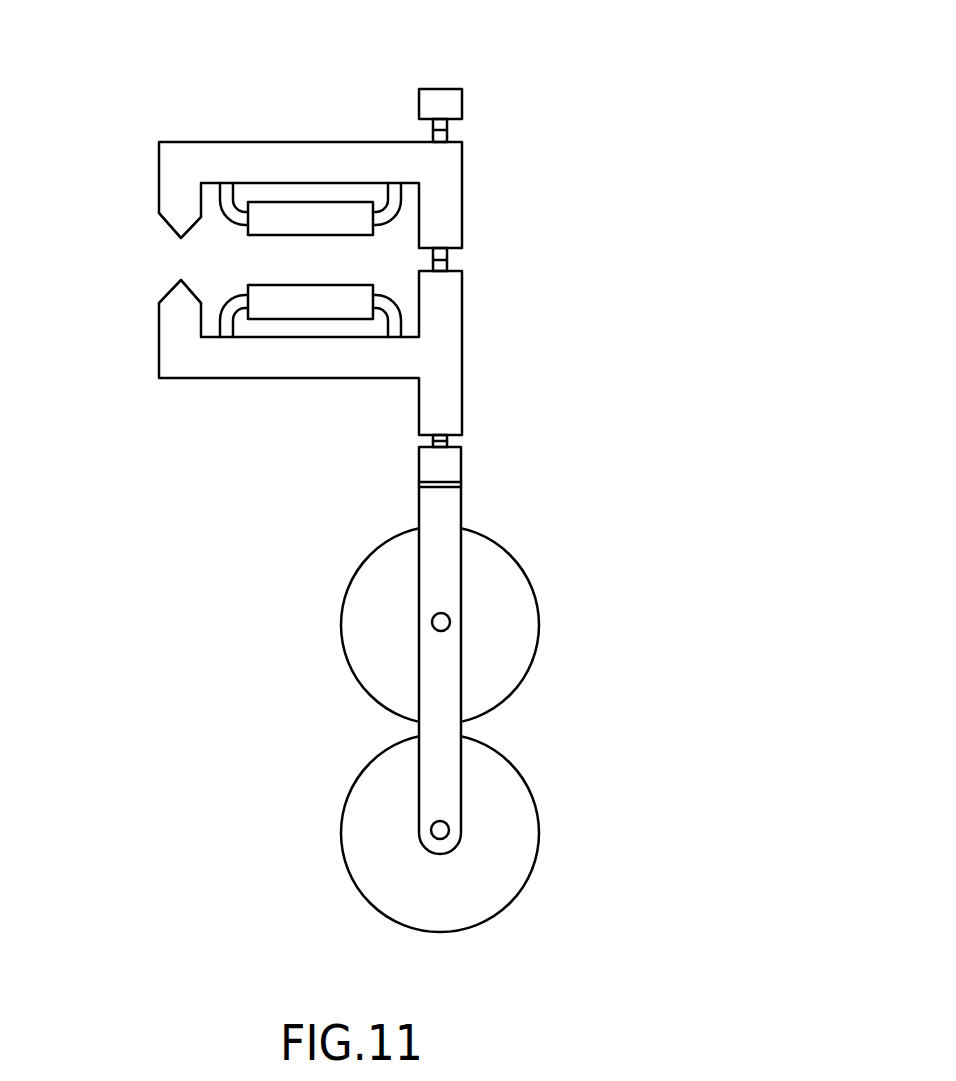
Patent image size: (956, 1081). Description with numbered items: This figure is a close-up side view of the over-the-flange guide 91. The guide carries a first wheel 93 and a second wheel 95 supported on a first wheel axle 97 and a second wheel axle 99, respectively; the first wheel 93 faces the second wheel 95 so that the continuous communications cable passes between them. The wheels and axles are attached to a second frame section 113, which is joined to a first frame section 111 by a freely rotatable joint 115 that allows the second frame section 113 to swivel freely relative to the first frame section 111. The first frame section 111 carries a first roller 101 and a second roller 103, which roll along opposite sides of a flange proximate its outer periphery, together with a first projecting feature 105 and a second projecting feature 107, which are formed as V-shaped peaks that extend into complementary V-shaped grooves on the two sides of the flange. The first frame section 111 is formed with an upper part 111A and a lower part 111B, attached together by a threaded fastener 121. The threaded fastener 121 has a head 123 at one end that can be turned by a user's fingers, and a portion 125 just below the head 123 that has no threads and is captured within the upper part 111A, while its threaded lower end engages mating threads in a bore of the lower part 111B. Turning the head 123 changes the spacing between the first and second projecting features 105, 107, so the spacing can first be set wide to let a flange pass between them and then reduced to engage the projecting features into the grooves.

The over-the-flange guide 91 is at (383, 689).
The first wheel 93 is at (521, 558).
The second wheel 95 is at (525, 780).
The first wheel axle 97 is at (434, 623).
The second wheel axle 99 is at (434, 832).
The first roller 101 is at (304, 215).
The second roller 103 is at (307, 308).
The first projecting feature 105 is at (178, 224).
The second projecting feature 107 is at (180, 298).
The first frame section 111 is at (336, 231).
The upper part 111A is at (450, 187).
The lower part 111B is at (443, 340).
The second frame section 113 is at (366, 483).
The freely rotatable joint 115 is at (487, 440).
The threaded fastener 121 is at (491, 262).
The head 123 is at (443, 102).
The portion 125 is at (444, 129).